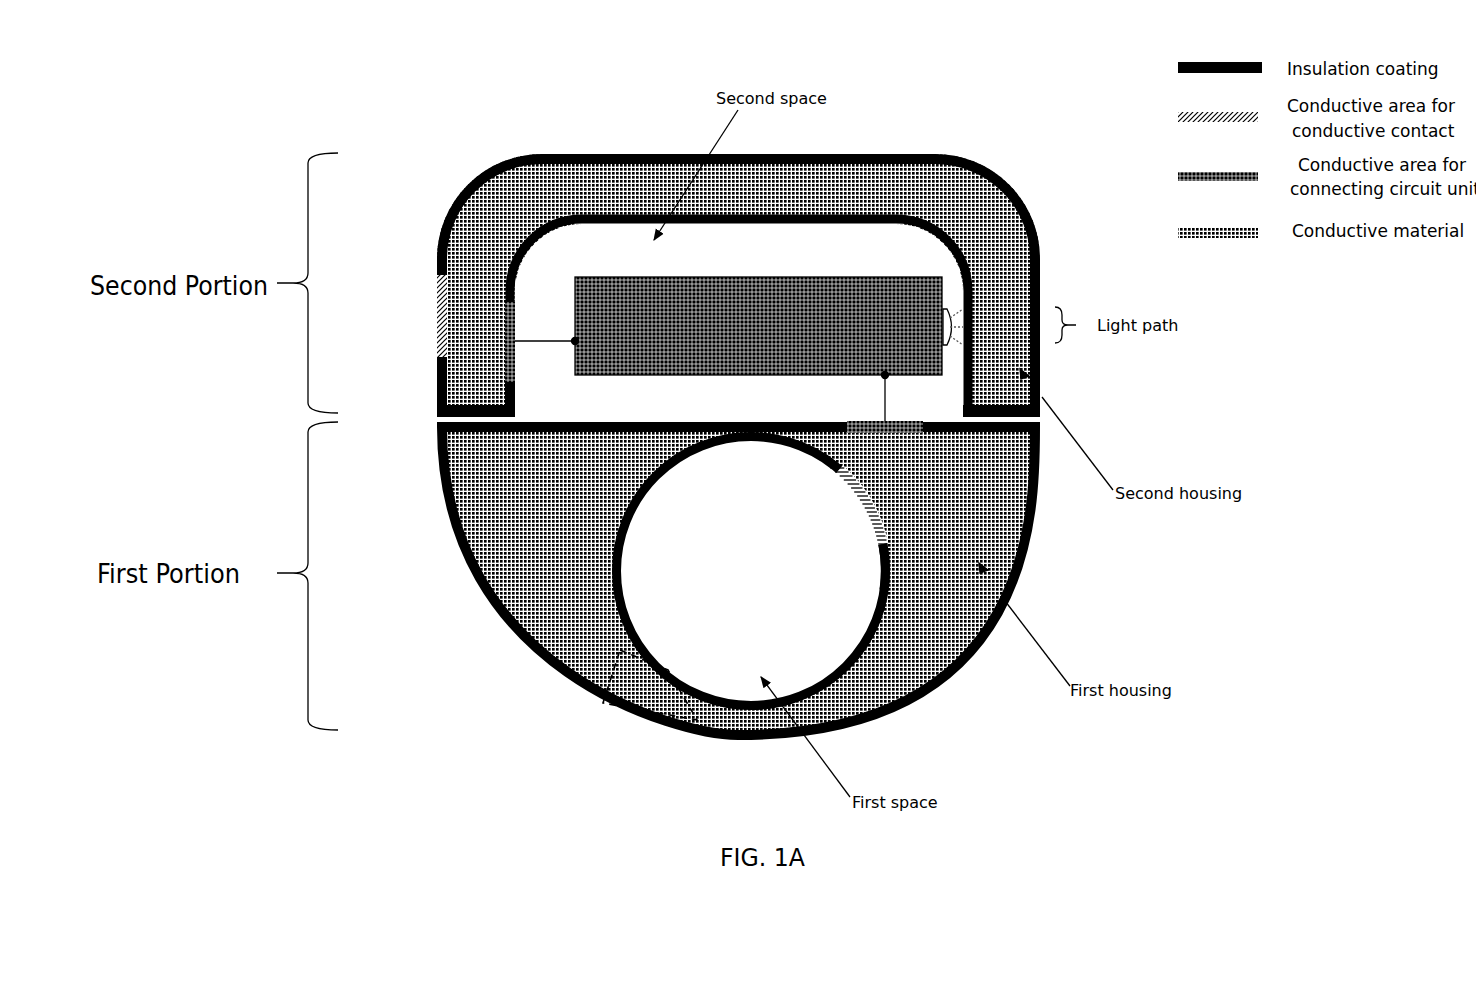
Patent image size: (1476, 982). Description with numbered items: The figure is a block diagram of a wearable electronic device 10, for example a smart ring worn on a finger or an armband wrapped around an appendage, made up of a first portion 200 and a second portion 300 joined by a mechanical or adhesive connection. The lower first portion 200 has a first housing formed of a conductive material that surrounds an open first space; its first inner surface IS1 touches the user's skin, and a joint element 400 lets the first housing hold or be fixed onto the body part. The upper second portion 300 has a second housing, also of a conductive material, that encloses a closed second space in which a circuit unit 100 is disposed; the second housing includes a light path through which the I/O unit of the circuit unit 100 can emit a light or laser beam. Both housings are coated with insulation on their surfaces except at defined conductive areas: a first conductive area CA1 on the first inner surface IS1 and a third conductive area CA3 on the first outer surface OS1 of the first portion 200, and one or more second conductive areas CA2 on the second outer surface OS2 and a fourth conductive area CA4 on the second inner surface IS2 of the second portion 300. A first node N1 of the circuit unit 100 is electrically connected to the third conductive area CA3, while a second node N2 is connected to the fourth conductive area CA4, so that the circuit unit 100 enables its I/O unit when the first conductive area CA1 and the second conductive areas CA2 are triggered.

The wearable electronic device 10 is at (860, 471).
The circuit unit 100 is at (778, 277).
The first portion 200 is at (1020, 568).
The second portion 300 is at (1002, 189).
The joint element 400 is at (666, 667).
The first node N1 is at (885, 375).
The second node N2 is at (578, 341).
The first conductive area CA1 is at (858, 494).
The second conductive area CA2 is at (437, 322).
The third conductive area CA3 is at (913, 429).
The fourth conductive area CA4 is at (515, 318).
The first inner surface IS1 is at (883, 573).
The second inner surface IS2 is at (520, 392).
The first outer surface OS1 is at (707, 417).
The second outer surface OS2 is at (436, 373).